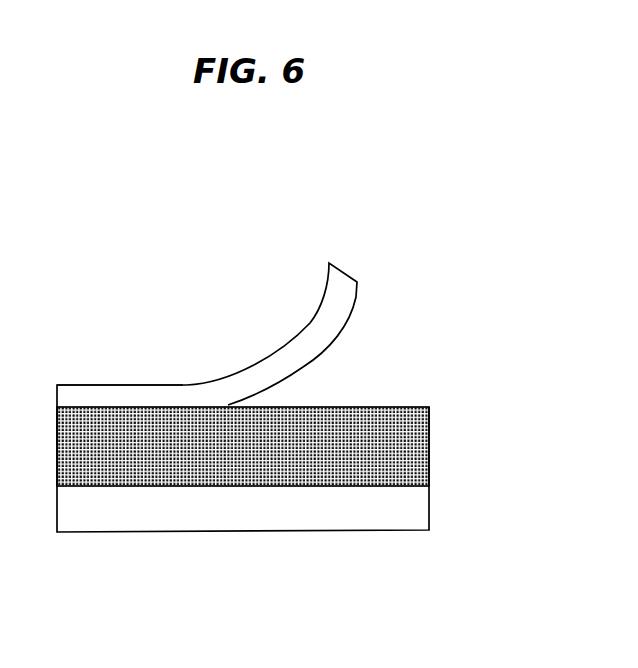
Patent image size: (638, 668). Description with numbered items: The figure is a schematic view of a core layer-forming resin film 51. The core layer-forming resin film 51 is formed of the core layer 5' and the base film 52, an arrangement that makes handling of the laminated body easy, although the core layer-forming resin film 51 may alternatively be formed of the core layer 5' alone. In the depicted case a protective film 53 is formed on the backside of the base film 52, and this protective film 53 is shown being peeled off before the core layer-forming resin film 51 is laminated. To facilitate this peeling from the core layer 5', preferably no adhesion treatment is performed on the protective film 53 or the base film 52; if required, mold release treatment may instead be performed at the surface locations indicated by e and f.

The core layer-forming resin film 51 is at (314, 334).
The base film 52 is at (410, 419).
The protective film 53 is at (338, 312).
The core layer 5' is at (314, 458).
The mold release treatment location e is at (282, 388).
The mold release treatment location f is at (137, 487).